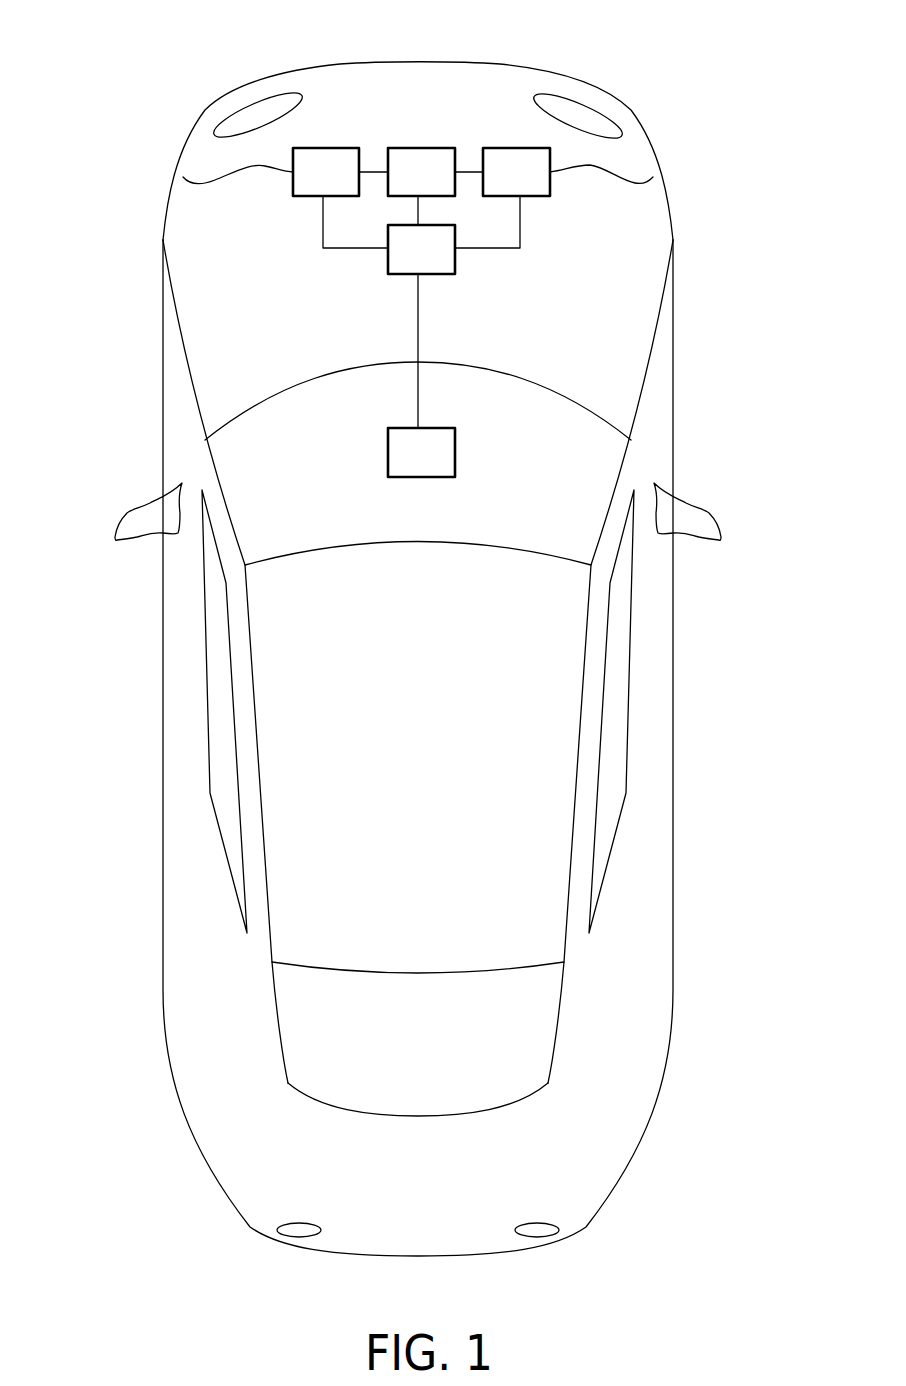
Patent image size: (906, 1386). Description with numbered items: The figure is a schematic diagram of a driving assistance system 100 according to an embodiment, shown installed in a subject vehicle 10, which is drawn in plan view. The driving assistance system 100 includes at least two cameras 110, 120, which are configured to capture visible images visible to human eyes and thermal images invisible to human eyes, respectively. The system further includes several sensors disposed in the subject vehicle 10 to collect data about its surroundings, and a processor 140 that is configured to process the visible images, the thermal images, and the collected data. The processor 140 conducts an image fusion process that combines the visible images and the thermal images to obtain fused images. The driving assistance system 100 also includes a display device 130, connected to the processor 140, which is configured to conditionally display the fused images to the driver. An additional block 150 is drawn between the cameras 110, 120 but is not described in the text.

The subject vehicle 10 is at (157, 658).
The driving assistance system 100 is at (525, 398).
The camera 110 is at (185, 180).
The camera 120 is at (650, 183).
The display device 130 is at (455, 460).
The processor 140 is at (455, 267).
The camera 150 is at (417, 148).